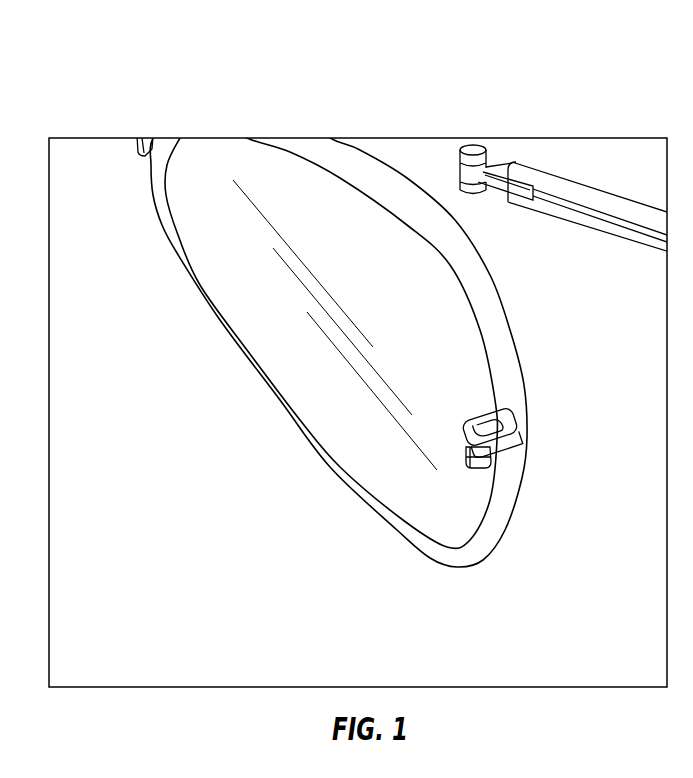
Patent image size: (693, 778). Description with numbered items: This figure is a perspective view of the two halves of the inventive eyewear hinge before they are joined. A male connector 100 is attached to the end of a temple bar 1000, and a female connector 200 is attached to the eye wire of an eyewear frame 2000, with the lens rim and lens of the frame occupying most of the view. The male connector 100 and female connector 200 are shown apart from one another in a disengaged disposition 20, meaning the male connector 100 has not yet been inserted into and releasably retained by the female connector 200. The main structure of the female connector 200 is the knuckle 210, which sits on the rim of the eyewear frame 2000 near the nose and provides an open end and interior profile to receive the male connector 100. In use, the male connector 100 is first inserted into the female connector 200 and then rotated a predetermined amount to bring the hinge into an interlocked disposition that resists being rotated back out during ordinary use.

The disengaged disposition 20 is at (528, 252).
The male connector 100 is at (500, 153).
The temple bar 1000 is at (596, 200).
The female connector 200 is at (530, 458).
The knuckle 210 is at (489, 410).
The eyewear frame 2000 is at (373, 182).